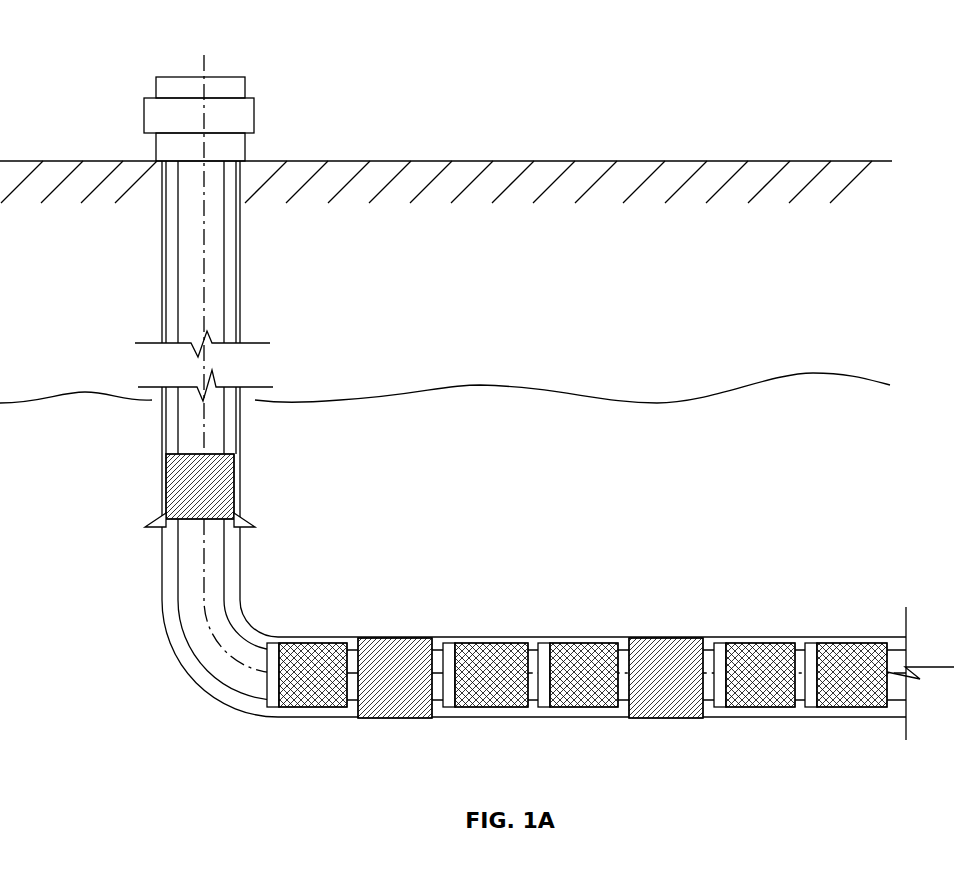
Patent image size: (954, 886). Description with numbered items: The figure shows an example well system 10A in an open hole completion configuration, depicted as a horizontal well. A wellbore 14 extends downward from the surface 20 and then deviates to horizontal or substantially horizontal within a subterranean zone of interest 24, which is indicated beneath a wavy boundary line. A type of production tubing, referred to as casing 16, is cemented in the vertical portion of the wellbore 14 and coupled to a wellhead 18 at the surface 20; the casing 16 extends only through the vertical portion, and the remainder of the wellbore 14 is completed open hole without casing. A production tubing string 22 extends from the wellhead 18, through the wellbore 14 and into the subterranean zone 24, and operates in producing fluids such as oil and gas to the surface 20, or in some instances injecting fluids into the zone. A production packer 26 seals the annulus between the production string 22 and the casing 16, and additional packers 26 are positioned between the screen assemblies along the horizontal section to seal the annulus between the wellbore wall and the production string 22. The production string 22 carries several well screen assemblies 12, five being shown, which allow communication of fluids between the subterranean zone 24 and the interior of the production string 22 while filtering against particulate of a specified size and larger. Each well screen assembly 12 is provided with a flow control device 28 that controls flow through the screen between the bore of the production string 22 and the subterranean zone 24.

The well system 10A is at (168, 698).
The well screen assembly 12 is at (303, 643).
The wellbore 14 is at (242, 566).
The casing 16 is at (162, 333).
The wellhead 18 is at (205, 77).
The surface 20 is at (685, 161).
The production tubing string 22 is at (177, 537).
The subterranean zone of interest 24 is at (505, 423).
The production packer 26 is at (166, 470).
The flow control device 28 is at (275, 643).